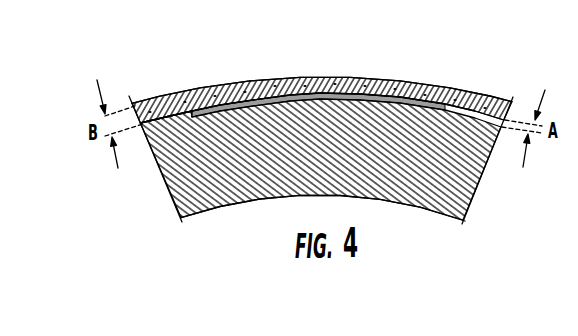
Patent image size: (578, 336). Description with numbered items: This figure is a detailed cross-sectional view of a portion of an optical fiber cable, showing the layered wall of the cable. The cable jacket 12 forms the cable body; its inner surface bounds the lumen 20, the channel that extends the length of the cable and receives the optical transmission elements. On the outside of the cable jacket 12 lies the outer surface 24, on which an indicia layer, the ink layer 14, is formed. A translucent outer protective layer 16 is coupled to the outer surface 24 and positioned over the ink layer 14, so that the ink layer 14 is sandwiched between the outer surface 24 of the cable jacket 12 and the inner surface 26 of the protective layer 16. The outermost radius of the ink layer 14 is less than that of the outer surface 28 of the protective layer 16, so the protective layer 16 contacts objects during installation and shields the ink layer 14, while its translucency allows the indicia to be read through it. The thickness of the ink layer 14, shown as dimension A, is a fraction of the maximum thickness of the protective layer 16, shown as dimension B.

The cable jacket 12 is at (473, 191).
The ink layer 14 is at (405, 91).
The outer protective layer 16 is at (485, 100).
The lumen 20 is at (380, 212).
The outer surface of cable jacket 24 is at (168, 106).
The inner surface of protective layer 26 is at (160, 132).
The outer surface of protective layer 28 is at (341, 70).